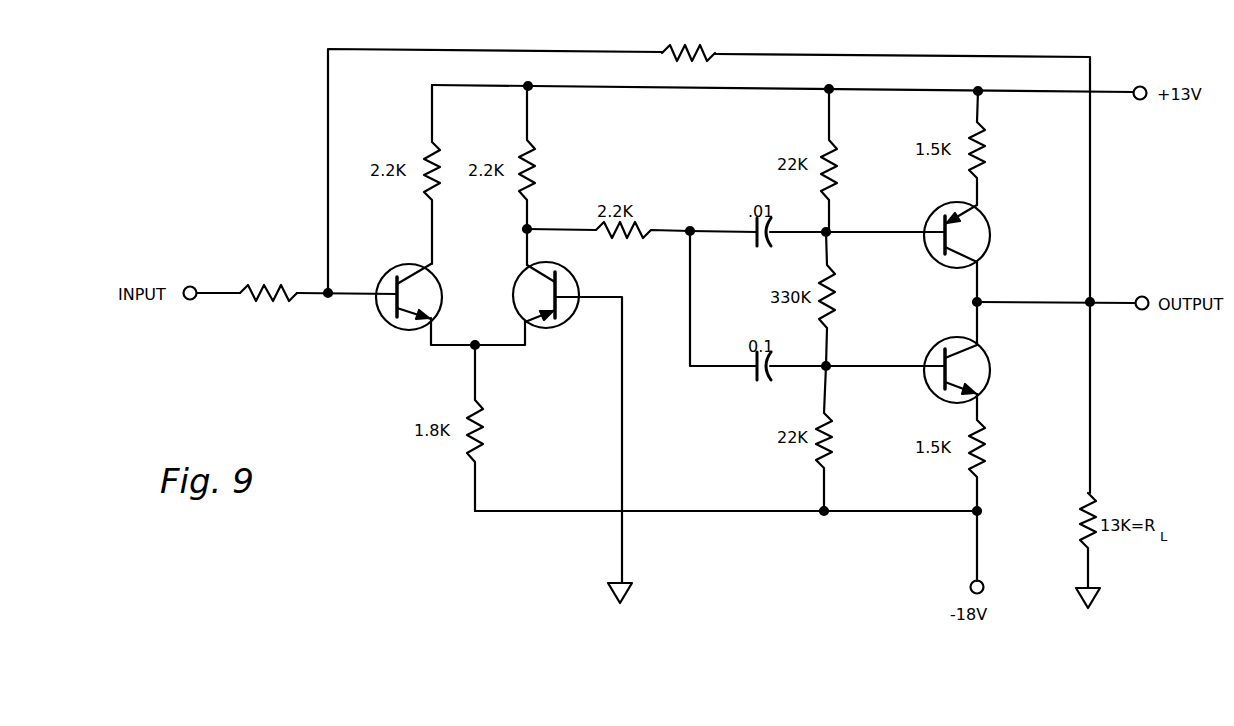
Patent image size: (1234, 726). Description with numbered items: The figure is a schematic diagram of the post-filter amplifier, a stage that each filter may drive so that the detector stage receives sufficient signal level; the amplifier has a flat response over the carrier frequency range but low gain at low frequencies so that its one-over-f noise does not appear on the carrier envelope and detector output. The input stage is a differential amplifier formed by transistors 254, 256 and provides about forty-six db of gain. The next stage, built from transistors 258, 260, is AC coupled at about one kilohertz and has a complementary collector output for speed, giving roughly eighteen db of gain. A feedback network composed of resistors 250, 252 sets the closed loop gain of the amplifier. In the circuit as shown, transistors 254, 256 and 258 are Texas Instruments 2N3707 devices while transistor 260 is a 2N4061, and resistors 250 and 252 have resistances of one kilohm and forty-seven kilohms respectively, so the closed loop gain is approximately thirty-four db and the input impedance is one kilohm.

The resistor 250 is at (280, 289).
The resistor 252 is at (706, 47).
The transistor 254 is at (385, 308).
The transistor 256 is at (567, 308).
The transistor 258 is at (977, 370).
The transistor 260 is at (980, 230).